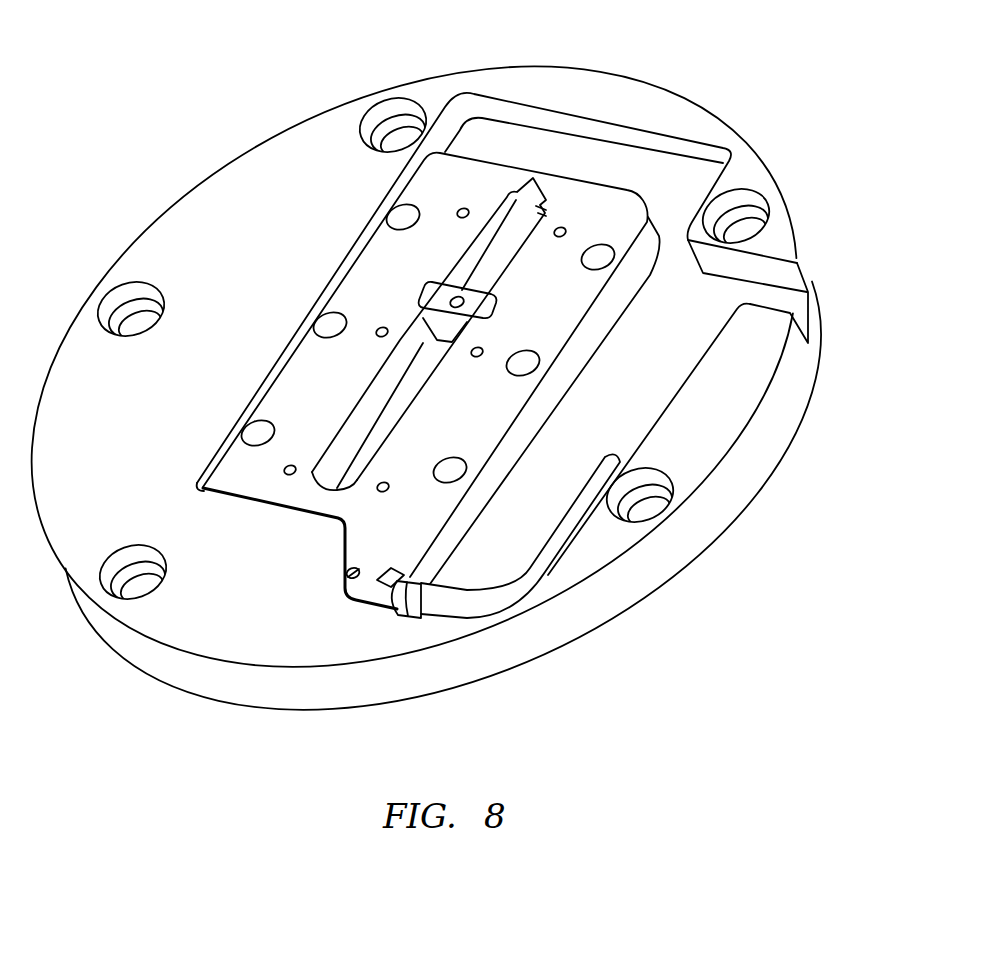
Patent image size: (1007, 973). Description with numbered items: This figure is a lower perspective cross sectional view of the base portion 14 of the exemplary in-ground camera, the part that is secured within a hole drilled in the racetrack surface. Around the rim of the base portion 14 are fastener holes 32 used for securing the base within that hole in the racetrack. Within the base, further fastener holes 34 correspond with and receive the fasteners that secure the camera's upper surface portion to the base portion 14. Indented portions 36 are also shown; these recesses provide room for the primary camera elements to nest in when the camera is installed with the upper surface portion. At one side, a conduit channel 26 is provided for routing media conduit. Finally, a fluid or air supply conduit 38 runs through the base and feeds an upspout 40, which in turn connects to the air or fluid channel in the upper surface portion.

The base portion 14 is at (167, 237).
The conduit channel 26 is at (795, 307).
The fastener holes 32 is at (375, 122).
The fastener holes 34 is at (535, 364).
The indented portions 36 is at (494, 270).
The fluid or air supply conduit 38 is at (517, 577).
The upspout 40 is at (348, 566).